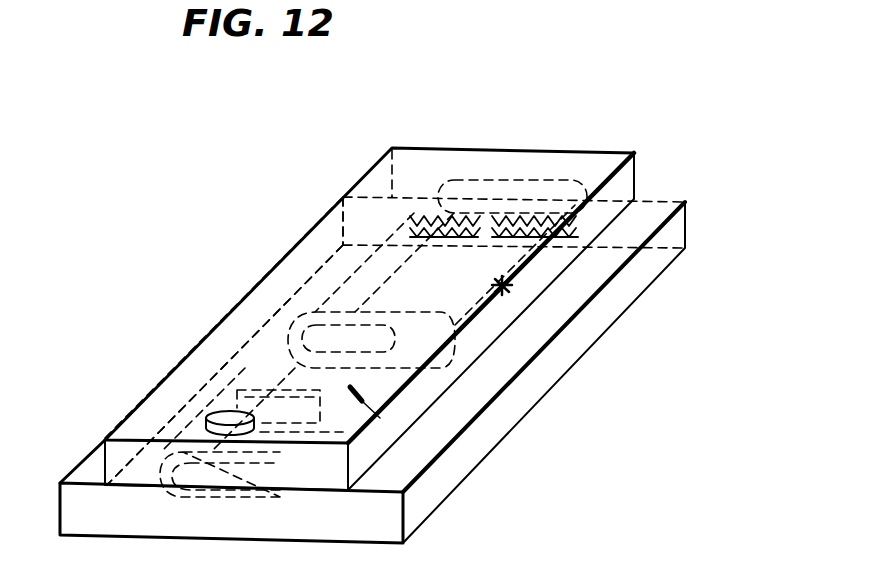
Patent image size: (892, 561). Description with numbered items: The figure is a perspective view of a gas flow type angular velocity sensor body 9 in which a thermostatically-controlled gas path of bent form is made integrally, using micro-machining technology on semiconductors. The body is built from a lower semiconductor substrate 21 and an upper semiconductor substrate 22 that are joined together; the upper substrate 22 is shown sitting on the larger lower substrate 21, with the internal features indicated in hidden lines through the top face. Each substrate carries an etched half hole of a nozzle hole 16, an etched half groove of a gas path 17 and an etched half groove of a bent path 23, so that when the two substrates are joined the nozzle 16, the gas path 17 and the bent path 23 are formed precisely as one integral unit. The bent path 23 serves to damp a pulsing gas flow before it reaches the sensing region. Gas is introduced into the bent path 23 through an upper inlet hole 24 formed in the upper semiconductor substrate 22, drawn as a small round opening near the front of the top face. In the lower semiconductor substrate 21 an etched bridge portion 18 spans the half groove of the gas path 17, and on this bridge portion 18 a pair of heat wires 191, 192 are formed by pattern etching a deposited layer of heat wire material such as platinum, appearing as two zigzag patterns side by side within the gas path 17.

The sensor body 9 is at (508, 292).
The nozzle hole 16 is at (393, 362).
The gas path 17 is at (343, 228).
The bridge portion 18 is at (487, 213).
The lower semiconductor substrate 21 is at (620, 295).
The upper semiconductor substrate 22 is at (628, 177).
The bent path 23 is at (397, 418).
The upper inlet hole 24 is at (217, 410).
The heat wire 191 is at (460, 213).
The heat wire 192 is at (537, 213).